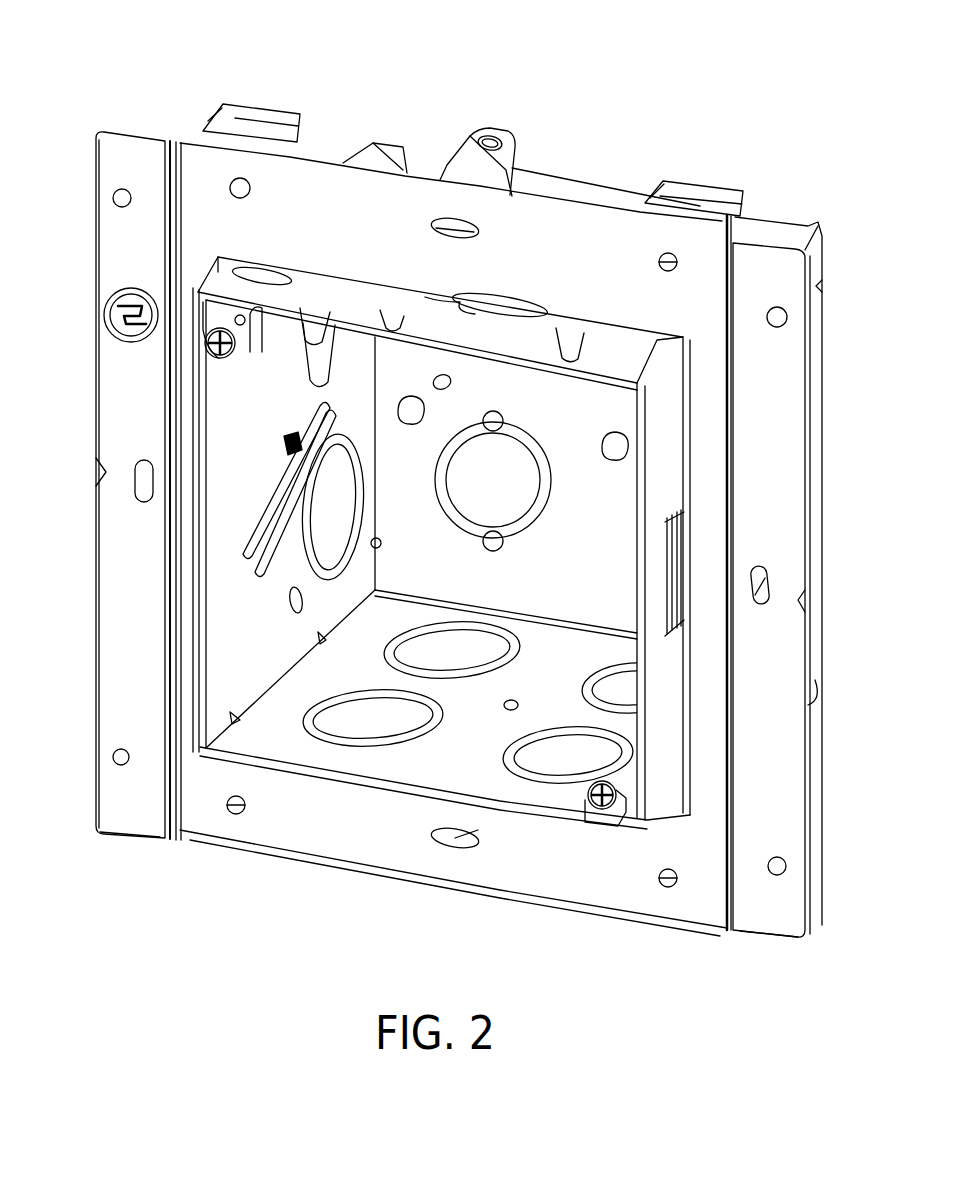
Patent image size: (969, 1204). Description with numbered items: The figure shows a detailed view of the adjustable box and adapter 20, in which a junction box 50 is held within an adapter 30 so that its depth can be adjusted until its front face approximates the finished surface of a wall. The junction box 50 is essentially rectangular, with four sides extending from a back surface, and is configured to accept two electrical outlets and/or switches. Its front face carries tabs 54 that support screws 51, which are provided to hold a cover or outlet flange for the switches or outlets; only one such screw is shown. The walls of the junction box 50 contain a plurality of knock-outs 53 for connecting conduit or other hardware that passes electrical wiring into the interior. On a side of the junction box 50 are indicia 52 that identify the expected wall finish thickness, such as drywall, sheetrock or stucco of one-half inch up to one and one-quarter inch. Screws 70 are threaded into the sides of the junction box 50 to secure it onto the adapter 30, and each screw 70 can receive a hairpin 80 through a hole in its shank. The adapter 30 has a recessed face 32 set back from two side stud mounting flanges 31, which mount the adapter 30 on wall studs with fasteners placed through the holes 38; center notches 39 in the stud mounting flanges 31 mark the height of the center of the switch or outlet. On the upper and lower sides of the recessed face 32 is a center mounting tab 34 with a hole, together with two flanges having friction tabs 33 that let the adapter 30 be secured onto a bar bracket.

The adjustable box and adapter 20 is at (748, 66).
The adapter 30 is at (94, 666).
The stud mounting flanges 31 is at (125, 829).
The recessed face 32 is at (370, 831).
The friction tabs 33 is at (296, 136).
The center mounting tab 34 is at (523, 150).
The holes 38 is at (113, 760).
The center notches 39 is at (95, 474).
The junction box 50 is at (191, 582).
The screws 51 is at (213, 330).
The indicia 52 is at (677, 613).
The knock-outs 53 is at (515, 495).
The tabs 54 is at (262, 327).
The screws 70 is at (290, 443).
The hairpin 80 is at (260, 520).